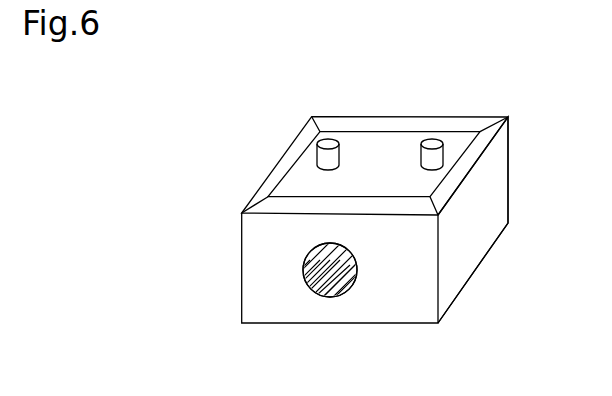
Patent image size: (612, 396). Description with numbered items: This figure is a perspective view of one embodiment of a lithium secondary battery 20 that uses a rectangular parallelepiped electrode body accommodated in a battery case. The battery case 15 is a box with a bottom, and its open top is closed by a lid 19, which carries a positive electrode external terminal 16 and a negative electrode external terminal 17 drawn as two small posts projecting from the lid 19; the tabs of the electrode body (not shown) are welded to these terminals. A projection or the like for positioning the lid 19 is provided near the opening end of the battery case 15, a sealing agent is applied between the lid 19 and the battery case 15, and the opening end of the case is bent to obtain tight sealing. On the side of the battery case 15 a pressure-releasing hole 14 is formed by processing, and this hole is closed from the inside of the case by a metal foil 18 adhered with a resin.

The battery 20 is at (497, 110).
The lid 19 is at (373, 150).
The positive electrode external terminal 16 is at (320, 160).
The negative electrode external terminal 17 is at (430, 147).
The battery case 15 is at (473, 246).
The metal foil 18 is at (322, 286).
The pressure-releasing hole 14 is at (359, 279).